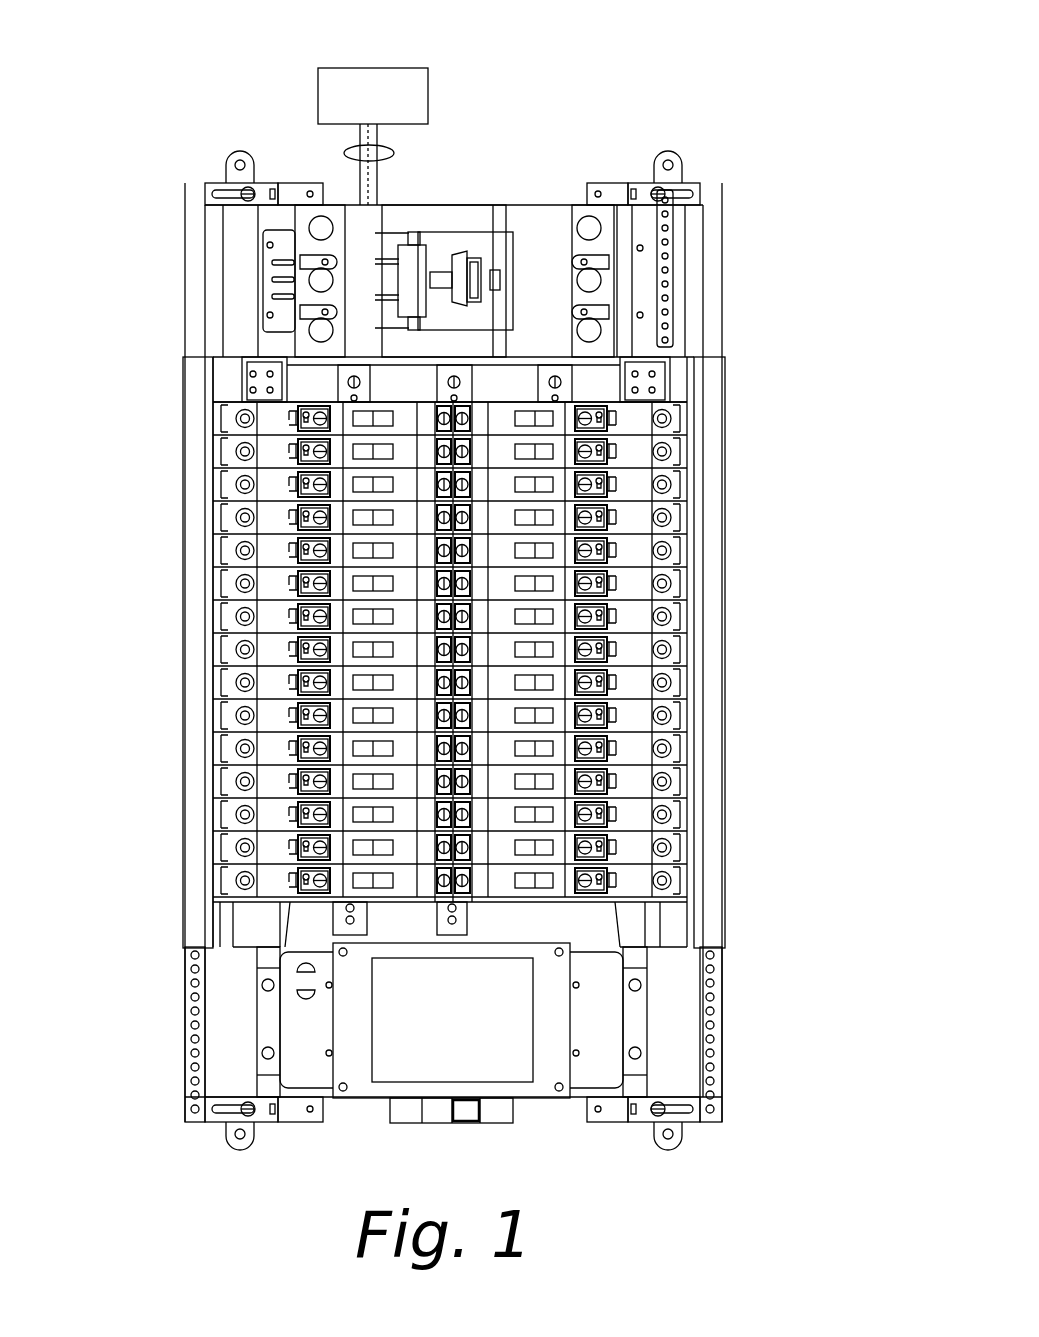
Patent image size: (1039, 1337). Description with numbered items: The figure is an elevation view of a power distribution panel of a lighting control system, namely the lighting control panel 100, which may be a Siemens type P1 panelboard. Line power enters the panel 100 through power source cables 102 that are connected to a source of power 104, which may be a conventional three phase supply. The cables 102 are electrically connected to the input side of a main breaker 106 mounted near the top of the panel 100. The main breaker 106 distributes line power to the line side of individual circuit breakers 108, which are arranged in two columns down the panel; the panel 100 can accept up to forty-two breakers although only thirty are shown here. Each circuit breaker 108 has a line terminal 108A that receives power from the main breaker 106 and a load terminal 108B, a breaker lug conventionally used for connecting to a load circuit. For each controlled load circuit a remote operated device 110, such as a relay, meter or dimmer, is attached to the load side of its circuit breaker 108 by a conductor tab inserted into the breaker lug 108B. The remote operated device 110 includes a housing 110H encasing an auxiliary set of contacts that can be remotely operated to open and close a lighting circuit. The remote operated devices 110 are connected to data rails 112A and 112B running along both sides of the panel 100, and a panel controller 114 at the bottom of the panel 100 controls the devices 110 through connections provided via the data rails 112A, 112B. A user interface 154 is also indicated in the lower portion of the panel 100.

The lighting control panel 100 is at (453, 650).
The power source cables 102 is at (394, 153).
The source of power 104 is at (430, 88).
The main breaker 106 is at (456, 238).
The circuit breaker 108 is at (556, 398).
The line terminal 108A is at (472, 428).
The load terminal 108B is at (586, 412).
The remote operated device 110 is at (636, 418).
The housing 110H is at (633, 426).
The data rail 112A is at (705, 826).
The data rail 112B is at (192, 833).
The panel controller 114 is at (526, 1090).
The user interface 154 is at (395, 1060).